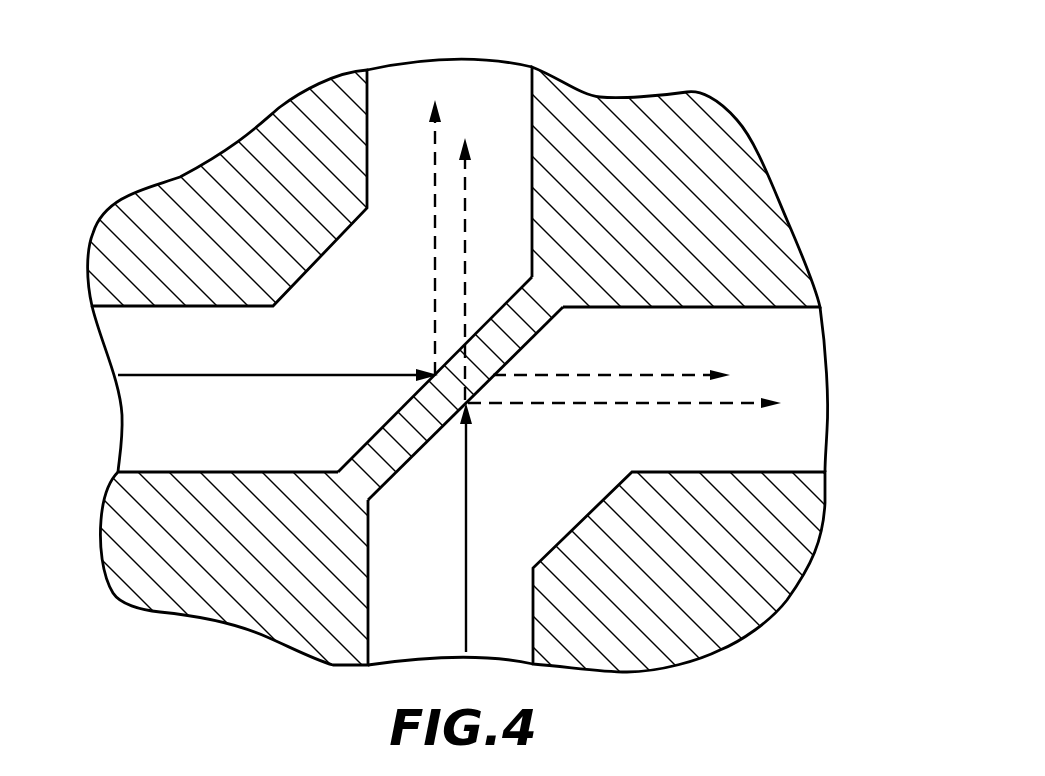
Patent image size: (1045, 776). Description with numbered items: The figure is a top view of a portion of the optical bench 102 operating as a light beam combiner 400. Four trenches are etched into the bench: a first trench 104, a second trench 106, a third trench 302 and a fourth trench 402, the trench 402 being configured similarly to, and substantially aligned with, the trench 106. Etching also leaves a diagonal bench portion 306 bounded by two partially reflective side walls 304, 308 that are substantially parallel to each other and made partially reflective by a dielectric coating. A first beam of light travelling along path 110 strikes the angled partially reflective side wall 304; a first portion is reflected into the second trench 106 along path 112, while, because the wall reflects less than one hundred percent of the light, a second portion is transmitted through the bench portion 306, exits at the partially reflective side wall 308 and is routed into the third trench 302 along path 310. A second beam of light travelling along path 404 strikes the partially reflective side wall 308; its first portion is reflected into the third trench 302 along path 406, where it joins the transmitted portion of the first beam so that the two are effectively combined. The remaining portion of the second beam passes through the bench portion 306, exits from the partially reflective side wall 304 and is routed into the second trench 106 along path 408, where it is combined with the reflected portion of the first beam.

The optical bench 102 is at (142, 580).
The first trench 104 is at (160, 407).
The second trench 106 is at (498, 80).
The path of first light beam 110 is at (295, 373).
The path of reflected first beam portion 112 is at (435, 237).
The third trench 302 is at (800, 348).
The partially reflective side wall 304 is at (398, 409).
The bench portion 306 is at (383, 452).
The partially reflective side wall 308 is at (542, 328).
The path of transmitted first beam portion 310 is at (638, 372).
The light beam combiner 400 is at (781, 115).
The fourth trench 402 is at (492, 646).
The path of second light beam 404 is at (466, 548).
The path of reflected second beam portion 406 is at (668, 405).
The path of transmitted second beam portion 408 is at (467, 223).